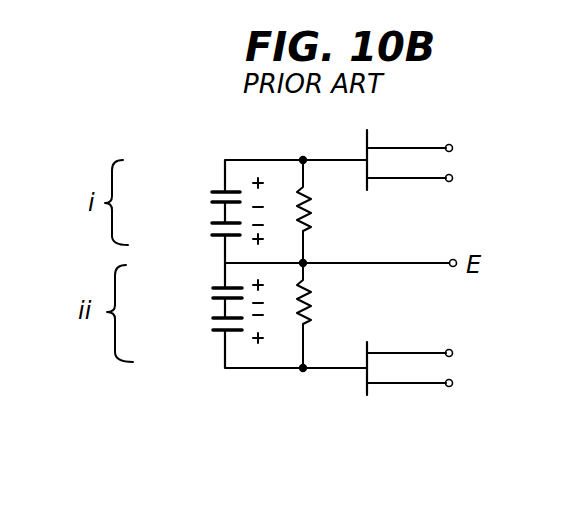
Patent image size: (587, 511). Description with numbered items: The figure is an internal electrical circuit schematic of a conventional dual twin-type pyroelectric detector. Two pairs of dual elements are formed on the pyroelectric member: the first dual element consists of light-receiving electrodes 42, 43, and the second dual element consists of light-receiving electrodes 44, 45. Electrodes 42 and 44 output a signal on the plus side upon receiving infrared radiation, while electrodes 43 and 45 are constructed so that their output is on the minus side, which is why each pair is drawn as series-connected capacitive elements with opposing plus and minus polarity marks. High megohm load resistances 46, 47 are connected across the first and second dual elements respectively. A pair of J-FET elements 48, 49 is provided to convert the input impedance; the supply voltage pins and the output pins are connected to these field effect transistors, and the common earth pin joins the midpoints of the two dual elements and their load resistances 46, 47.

The light-receiving electrode 42 is at (208, 192).
The light-receiving electrode 43 is at (208, 224).
The light-receiving electrode 44 is at (208, 290).
The light-receiving electrode 45 is at (208, 328).
The high megohm load resistance 46 is at (311, 214).
The high megohm load resistance 47 is at (311, 298).
The J-FET element 48 is at (405, 146).
The J-FET element 49 is at (406, 384).